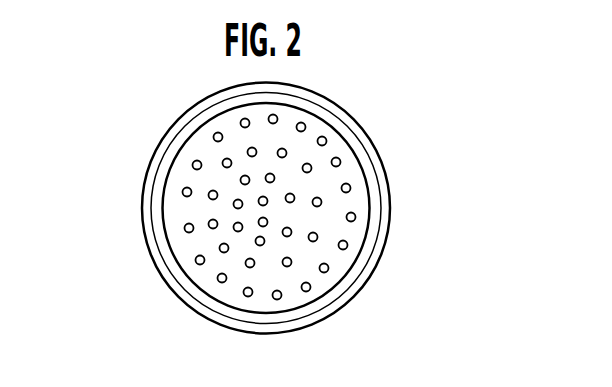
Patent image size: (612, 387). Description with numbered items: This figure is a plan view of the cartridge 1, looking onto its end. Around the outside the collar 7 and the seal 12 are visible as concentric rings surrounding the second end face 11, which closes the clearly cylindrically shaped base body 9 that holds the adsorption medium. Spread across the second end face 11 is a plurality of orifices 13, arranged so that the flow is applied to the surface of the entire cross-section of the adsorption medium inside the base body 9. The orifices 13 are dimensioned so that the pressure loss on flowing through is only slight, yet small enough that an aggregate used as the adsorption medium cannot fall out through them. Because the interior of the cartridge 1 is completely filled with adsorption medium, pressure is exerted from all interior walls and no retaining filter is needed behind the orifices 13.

The cartridge 1 is at (428, 189).
The collar 7 is at (353, 125).
The base body 9 is at (133, 126).
The second end face 11 is at (178, 210).
The seal 12 is at (365, 258).
The orifices 13 is at (276, 115).